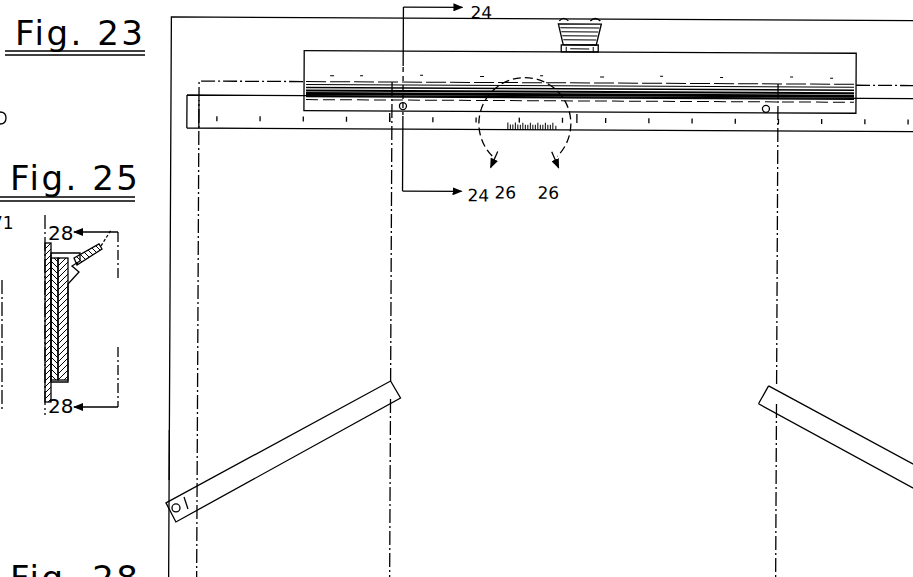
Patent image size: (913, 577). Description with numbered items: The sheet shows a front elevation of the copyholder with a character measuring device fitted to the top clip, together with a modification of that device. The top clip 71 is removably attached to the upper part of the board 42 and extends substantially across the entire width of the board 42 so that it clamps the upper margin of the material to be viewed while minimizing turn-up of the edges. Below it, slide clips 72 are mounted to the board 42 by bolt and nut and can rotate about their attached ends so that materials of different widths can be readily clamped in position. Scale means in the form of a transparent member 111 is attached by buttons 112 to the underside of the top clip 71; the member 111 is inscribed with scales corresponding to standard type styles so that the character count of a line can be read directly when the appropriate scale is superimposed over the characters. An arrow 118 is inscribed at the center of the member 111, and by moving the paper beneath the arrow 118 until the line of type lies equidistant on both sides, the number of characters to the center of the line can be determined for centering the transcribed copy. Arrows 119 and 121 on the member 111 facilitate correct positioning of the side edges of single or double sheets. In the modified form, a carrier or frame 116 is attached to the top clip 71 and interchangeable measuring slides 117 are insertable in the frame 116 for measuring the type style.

In FIG. 23, the top clip 71 is at (850, 70).
In FIG. 25, the top clip 71 is at (80, 262).
In FIG. 23, the slide clips 72 is at (293, 445).
In FIG. 23, the transparent member 111 is at (235, 118).
In FIG. 23, the buttons 112 is at (407, 108).
In FIG. 25, the carrier or frame 116 is at (68, 326).
In FIG. 25, the measuring slides 117 is at (58, 360).
In FIG. 23, the arrow 118 is at (578, 119).
In FIG. 23, the arrow 119 is at (199, 118).
In FIG. 23, the arrow 121 is at (389, 120).
In FIG. 23, the board 42 is at (180, 448).
In FIG. 25, the board 42 is at (33, 333).